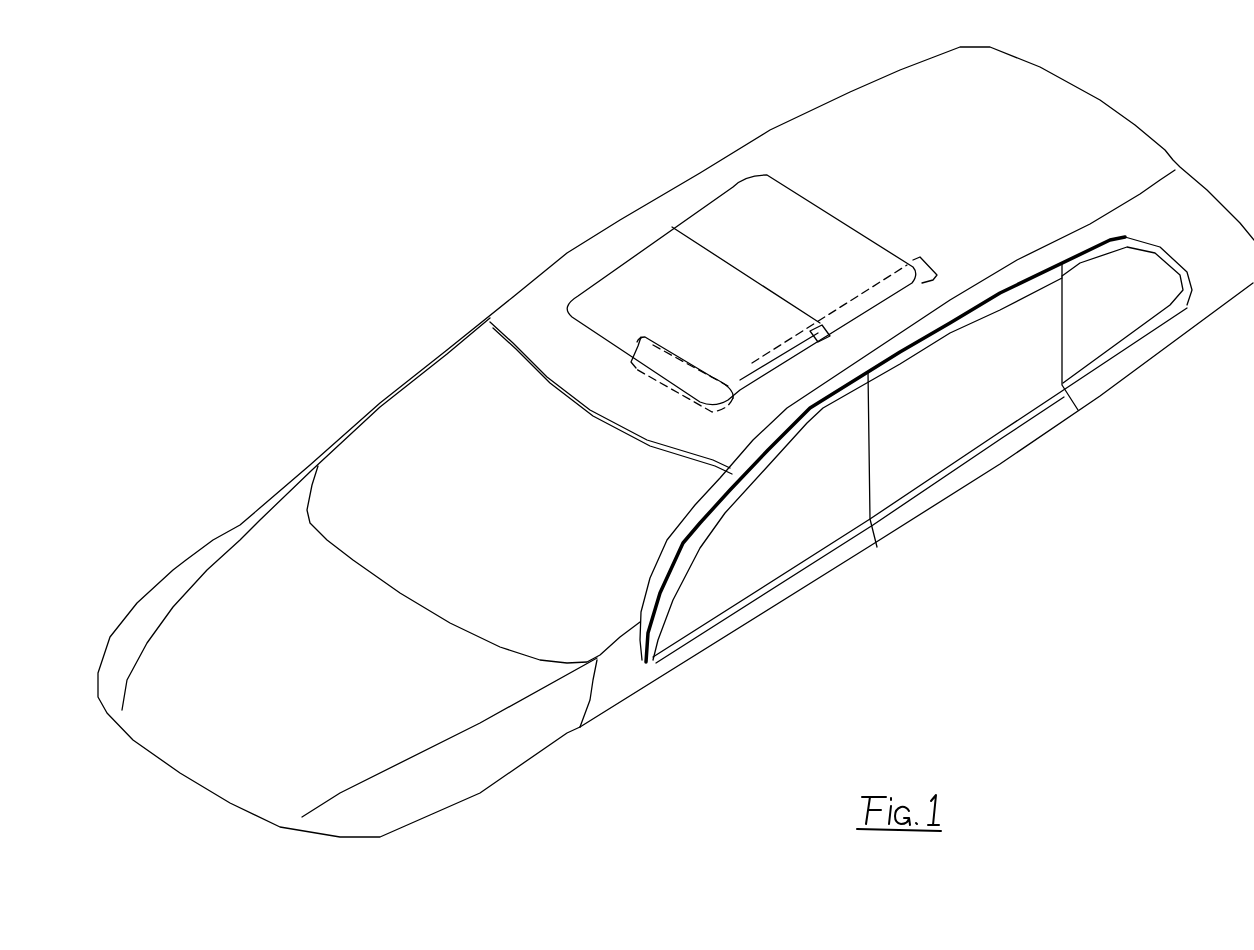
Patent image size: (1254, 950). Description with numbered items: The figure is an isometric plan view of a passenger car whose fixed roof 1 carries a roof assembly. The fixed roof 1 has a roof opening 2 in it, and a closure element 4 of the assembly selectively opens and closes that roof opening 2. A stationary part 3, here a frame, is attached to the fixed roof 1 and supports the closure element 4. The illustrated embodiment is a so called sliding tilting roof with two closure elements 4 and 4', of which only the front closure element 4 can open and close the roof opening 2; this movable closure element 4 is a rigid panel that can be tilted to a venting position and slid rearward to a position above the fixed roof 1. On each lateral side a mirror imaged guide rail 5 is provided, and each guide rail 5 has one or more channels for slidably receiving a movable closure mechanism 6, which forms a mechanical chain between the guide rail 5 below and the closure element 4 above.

The fixed roof 1 is at (780, 153).
The roof opening 2 is at (633, 250).
The stationary part 3 is at (673, 390).
The closure element 4 is at (712, 290).
The closure element 4' is at (742, 220).
The guide rail 5 is at (922, 283).
The movable closure mechanism 6 is at (753, 375).